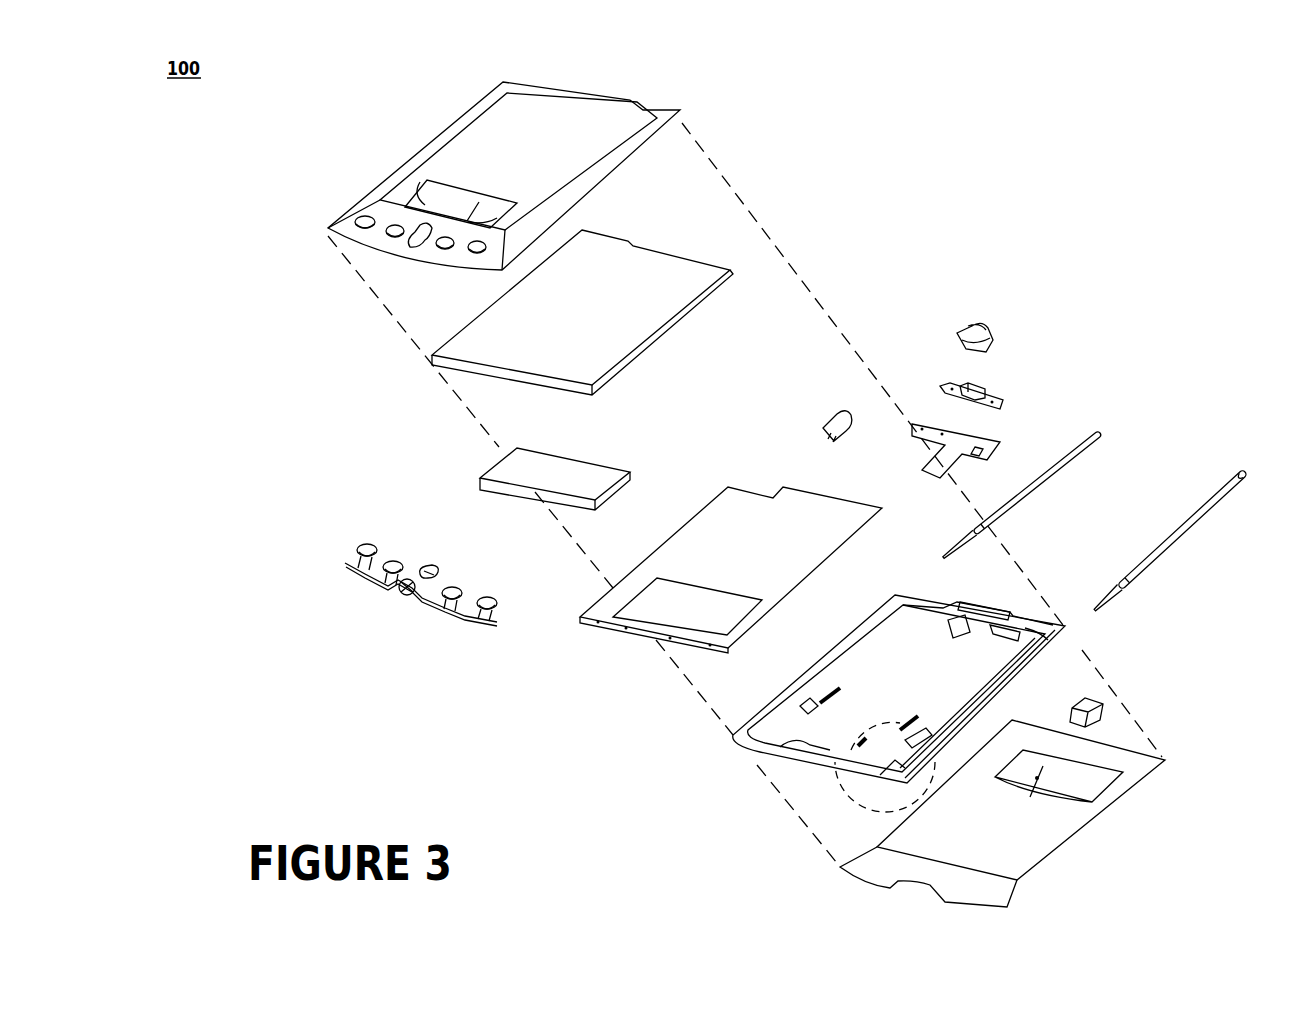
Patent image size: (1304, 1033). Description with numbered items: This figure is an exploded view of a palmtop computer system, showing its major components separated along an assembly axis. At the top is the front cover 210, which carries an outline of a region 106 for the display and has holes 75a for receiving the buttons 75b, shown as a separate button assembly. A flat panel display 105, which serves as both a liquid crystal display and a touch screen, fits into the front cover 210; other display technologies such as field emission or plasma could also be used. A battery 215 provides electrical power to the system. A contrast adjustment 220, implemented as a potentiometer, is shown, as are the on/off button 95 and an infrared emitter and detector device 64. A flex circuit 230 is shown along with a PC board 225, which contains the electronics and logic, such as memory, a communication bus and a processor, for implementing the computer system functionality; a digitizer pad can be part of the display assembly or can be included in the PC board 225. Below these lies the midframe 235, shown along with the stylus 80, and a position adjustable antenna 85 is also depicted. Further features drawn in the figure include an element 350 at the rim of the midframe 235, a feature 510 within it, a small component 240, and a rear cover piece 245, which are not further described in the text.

The front cover 210 is at (676, 109).
The region 106 is at (430, 197).
The holes 75a is at (343, 223).
The flat panel display 105 is at (698, 256).
The battery 215 is at (482, 461).
The buttons 75b is at (352, 546).
The PC board 225 is at (598, 590).
The contrast adjustment 220 is at (830, 410).
The on/off button 95 is at (975, 315).
The infrared emitter and detector device 64 is at (999, 391).
The flex circuit 230 is at (993, 437).
The position adjustable antenna 85 is at (1103, 427).
The stylus 80 is at (1215, 517).
The midframe 235 is at (1031, 682).
The rim 350 is at (1030, 630).
The mounting feature 510 is at (868, 730).
The battery door latch 240 is at (1108, 711).
The back cover 245 is at (1068, 858).